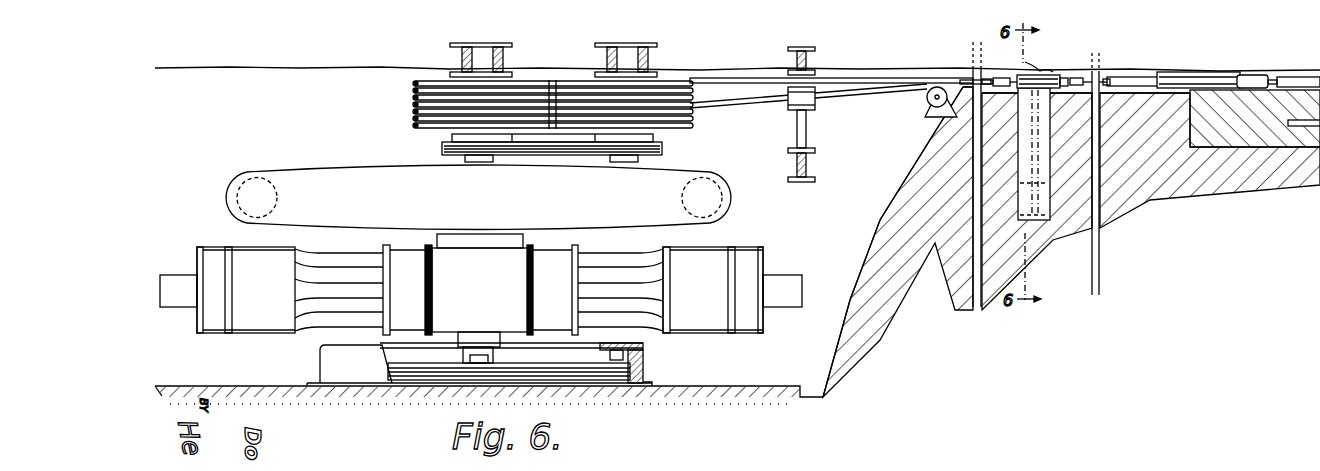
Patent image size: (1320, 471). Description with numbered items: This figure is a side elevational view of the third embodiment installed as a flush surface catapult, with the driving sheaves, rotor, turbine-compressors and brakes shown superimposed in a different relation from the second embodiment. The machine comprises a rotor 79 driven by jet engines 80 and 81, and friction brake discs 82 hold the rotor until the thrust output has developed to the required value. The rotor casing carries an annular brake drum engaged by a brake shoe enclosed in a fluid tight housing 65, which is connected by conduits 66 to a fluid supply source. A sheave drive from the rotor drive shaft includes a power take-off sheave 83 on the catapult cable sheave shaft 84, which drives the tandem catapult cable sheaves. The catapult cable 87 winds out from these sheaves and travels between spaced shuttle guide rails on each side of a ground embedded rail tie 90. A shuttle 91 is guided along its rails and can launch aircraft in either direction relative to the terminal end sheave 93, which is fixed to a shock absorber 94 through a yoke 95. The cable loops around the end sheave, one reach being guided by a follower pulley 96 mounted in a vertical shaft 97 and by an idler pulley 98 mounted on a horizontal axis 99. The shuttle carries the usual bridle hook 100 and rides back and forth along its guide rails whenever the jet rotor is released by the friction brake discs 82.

The fluid tight housing 65 is at (414, 96).
The conduits 66 is at (692, 108).
The rotor 79 is at (294, 171).
The jet engine 80 is at (280, 318).
The jet engine 81 is at (707, 310).
The friction brake discs 82 is at (437, 367).
The power take-off sheave 83 is at (460, 156).
The catapult cable sheave shaft 84 is at (443, 138).
The catapult cable 87 is at (710, 78).
The rail tie 90 is at (1042, 173).
The shuttle 91 is at (1053, 77).
The terminal end sheave 93 is at (1135, 75).
The shock absorber 94 is at (1288, 80).
The yoke 95 is at (1250, 75).
The follower pulley 96 is at (825, 92).
The vertical shaft 97 is at (803, 140).
The idler pulley 98 is at (927, 97).
The horizontal axis 99 is at (933, 108).
The bridle hook 100 is at (1030, 62).